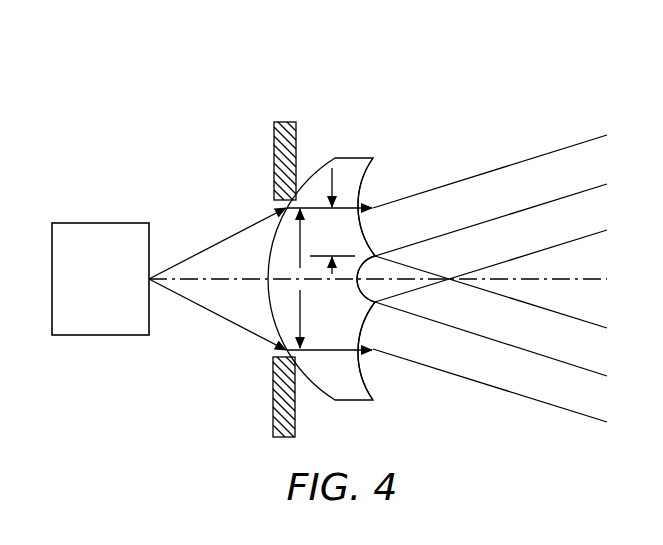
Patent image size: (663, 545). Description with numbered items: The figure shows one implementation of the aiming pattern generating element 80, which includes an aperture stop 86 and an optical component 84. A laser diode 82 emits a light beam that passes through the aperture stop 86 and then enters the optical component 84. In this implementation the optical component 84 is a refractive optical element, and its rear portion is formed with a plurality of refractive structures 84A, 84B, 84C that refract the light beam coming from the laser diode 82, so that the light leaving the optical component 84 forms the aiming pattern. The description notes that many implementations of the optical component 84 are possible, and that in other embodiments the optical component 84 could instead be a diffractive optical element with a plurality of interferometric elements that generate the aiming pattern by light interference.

The aiming pattern generating element 80 is at (391, 92).
The laser diode 82 is at (134, 223).
The optical component 84 is at (362, 158).
The refractive structure 84A is at (360, 232).
The refractive structure 84B is at (393, 258).
The refractive structure 84C is at (360, 327).
The aperture stop 86 is at (274, 143).